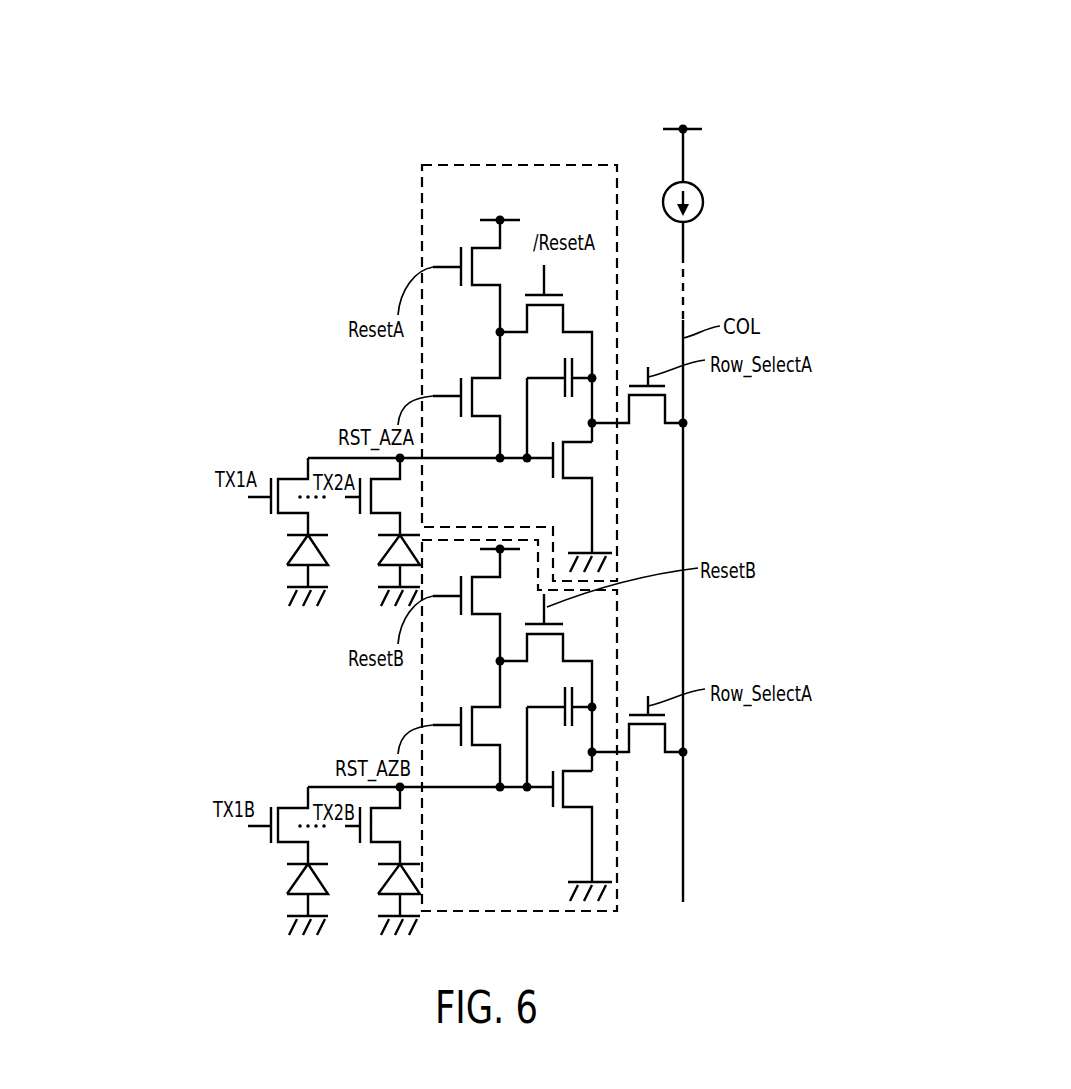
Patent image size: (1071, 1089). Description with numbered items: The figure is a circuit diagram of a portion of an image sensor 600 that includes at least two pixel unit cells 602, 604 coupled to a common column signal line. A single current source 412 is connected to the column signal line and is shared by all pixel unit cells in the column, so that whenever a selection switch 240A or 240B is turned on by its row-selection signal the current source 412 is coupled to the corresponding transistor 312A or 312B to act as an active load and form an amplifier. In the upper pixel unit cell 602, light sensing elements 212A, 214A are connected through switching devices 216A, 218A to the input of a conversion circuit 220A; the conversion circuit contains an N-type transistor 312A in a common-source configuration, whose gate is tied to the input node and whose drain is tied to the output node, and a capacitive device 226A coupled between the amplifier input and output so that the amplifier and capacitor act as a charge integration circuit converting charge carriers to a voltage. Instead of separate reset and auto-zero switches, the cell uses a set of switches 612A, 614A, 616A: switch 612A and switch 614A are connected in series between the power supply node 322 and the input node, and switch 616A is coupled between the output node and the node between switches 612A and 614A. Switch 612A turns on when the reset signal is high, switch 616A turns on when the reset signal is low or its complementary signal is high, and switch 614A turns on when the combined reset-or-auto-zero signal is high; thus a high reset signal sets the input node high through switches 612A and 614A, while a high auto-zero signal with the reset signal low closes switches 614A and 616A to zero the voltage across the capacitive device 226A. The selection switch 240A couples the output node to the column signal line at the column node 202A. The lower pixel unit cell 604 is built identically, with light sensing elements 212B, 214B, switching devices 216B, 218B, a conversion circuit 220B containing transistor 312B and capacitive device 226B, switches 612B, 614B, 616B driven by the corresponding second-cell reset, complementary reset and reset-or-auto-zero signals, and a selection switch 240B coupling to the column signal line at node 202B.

The image sensor 600 is at (848, 56).
The pixel unit cell 602 is at (132, 400).
The pixel unit cell 604 is at (132, 729).
The first power supply node 322 is at (688, 127).
The current source 412 is at (703, 202).
The switch 612A is at (482, 247).
The switch 614A is at (482, 375).
The switch 616A is at (567, 318).
The capacitive device 226A is at (563, 370).
The N-type transistor 312A is at (578, 480).
The selection switch 240A is at (645, 420).
The column output node 202A is at (683, 423).
The conversion circuit 220A is at (618, 505).
The switching device 216A is at (285, 517).
The switching device 218A is at (374, 520).
The light sensing element 212A is at (290, 555).
The light sensing element 214A is at (382, 553).
The switch 612B is at (466, 609).
The switch 614B is at (465, 740).
The switch 616B is at (556, 650).
The capacitive device 226B is at (548, 727).
The N-type transistor 312B is at (578, 804).
The selection switch 240B is at (636, 754).
The column output node 202B is at (718, 772).
The conversion circuit 220B is at (618, 835).
The switching device 216B is at (298, 824).
The switching device 218B is at (365, 839).
The light sensing element 212B is at (272, 899).
The light sensing element 214B is at (375, 913).